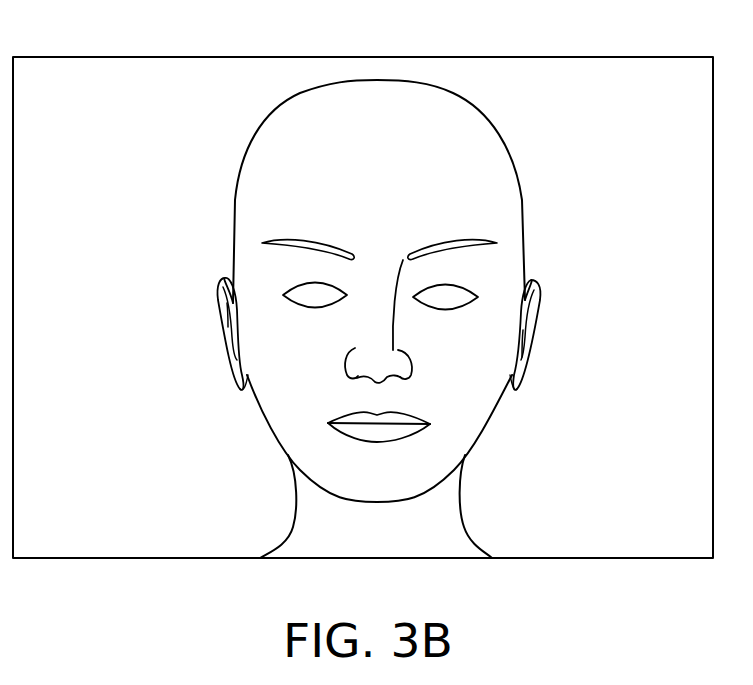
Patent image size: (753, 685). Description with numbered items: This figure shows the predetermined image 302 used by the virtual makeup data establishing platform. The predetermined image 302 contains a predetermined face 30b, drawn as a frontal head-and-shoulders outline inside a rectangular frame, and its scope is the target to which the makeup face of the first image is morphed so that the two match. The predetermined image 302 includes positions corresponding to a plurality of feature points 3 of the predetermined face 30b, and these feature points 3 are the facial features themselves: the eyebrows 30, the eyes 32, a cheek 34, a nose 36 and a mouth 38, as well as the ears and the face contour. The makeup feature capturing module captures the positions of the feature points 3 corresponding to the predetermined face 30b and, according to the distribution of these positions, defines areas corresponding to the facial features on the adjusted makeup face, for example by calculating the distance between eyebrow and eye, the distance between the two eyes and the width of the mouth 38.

The predetermined image 302 is at (583, 57).
The predetermined face 30b is at (252, 148).
The feature points 3 is at (124, 222).
The eyebrows 30 is at (302, 242).
The eyes 32 is at (283, 295).
The cheek 34 is at (272, 338).
The nose 36 is at (362, 358).
The mouth 38 is at (338, 422).